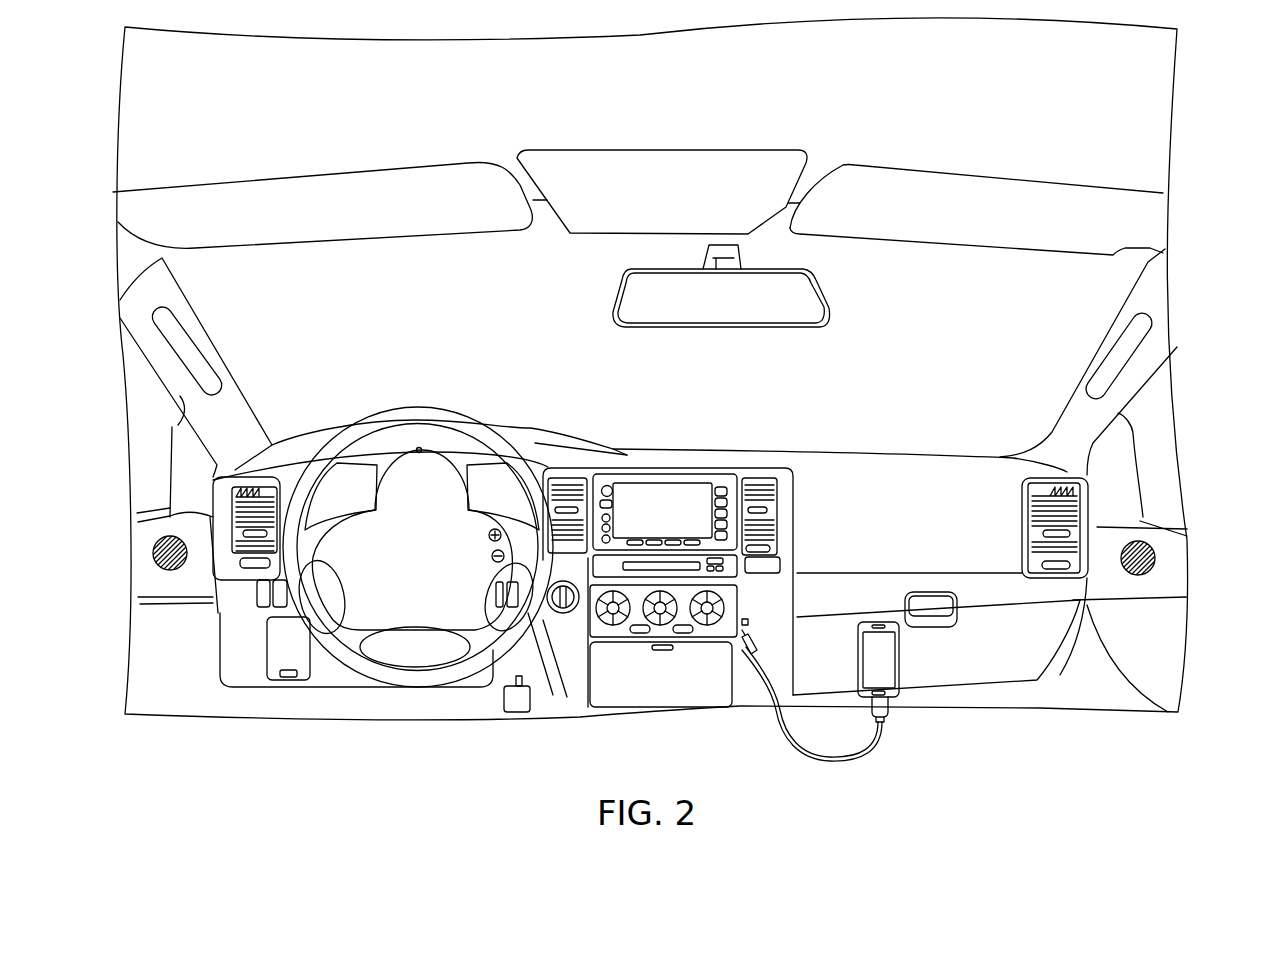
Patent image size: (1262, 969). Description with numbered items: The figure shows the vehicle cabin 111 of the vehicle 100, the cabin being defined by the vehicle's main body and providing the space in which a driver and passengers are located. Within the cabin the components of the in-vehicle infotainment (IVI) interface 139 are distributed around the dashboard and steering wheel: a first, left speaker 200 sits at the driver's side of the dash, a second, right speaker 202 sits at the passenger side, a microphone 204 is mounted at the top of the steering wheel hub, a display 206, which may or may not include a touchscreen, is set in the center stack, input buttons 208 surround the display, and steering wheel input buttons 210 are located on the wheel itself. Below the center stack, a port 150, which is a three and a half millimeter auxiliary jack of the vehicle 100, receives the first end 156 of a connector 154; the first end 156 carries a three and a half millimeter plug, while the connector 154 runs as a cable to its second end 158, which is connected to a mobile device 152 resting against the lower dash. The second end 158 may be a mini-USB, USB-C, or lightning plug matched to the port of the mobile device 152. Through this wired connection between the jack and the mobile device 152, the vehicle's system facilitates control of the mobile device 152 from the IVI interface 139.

The vehicle 100 is at (236, 151).
The vehicle cabin 111 is at (454, 282).
The in-vehicle infotainment (IVI) interface 139 is at (669, 421).
The port 150 is at (748, 617).
The mobile device 152 is at (900, 670).
The connector 154 is at (872, 752).
The first end 156 is at (758, 658).
The second end 158 is at (890, 714).
The first speaker 200 is at (155, 565).
The second speaker 202 is at (1160, 561).
The microphone 204 is at (421, 448).
The display 206 is at (690, 512).
The input buttons 208 is at (608, 467).
The steering wheel input buttons 210 is at (466, 548).